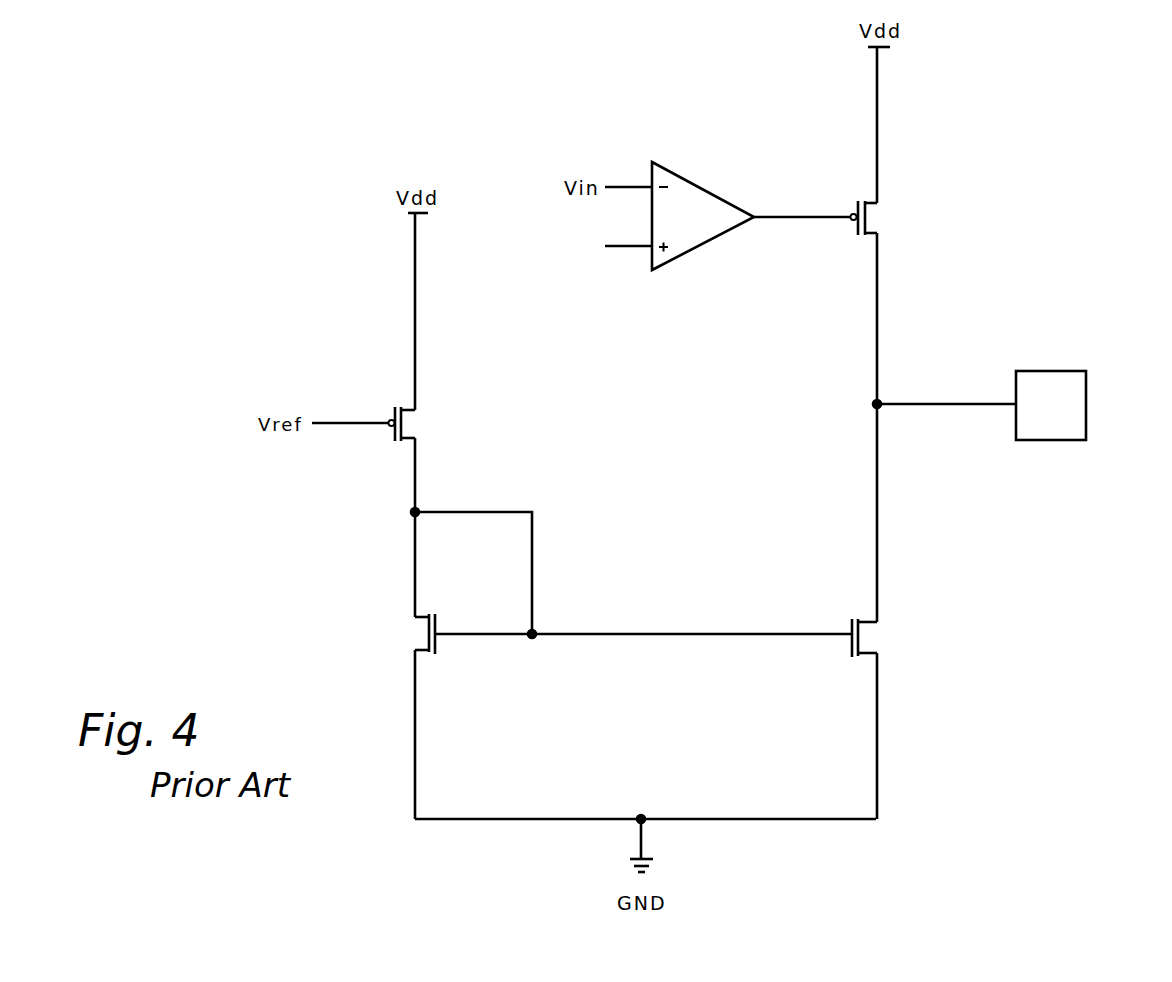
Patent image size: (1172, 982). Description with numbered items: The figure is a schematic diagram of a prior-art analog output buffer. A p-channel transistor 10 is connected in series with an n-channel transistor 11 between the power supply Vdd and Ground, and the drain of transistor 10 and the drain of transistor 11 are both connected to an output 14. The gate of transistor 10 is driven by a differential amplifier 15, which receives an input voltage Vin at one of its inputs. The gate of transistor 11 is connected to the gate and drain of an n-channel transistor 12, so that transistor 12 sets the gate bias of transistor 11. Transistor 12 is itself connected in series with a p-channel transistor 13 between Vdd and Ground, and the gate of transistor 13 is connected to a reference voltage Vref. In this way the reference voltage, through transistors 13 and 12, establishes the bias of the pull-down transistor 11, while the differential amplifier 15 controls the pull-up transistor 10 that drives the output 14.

The p-channel transistor 10 is at (879, 219).
The n-channel transistor 11 is at (876, 637).
The n-channel transistor 12 is at (413, 634).
The p-channel transistor 13 is at (421, 424).
The output 14 is at (1088, 384).
The differential amplifier 15 is at (700, 243).